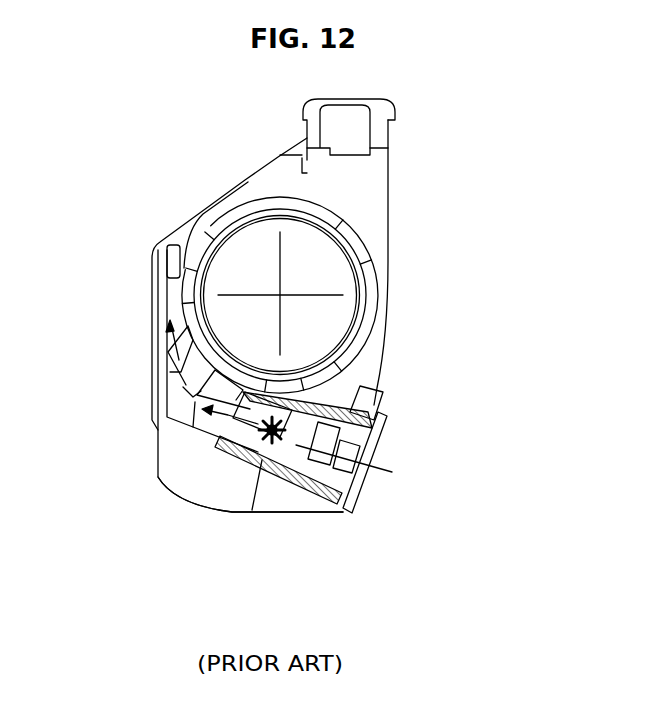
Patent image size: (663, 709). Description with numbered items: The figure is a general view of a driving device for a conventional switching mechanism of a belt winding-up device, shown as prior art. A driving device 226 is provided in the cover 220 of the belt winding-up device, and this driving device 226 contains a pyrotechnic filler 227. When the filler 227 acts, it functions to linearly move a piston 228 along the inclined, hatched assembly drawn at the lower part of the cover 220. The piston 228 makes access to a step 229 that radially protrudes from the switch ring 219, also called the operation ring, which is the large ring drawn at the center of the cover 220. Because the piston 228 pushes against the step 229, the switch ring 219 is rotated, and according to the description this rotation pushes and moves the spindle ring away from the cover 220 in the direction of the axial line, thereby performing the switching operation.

The switch ring 219 is at (370, 268).
The cover 220 is at (370, 198).
The driving device 226 is at (212, 477).
The pyrotechnic filler 227 is at (357, 472).
The piston 228 is at (214, 420).
The step 229 is at (183, 385).